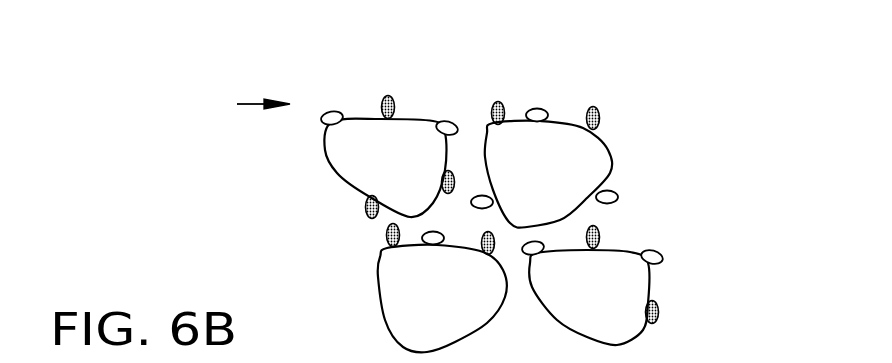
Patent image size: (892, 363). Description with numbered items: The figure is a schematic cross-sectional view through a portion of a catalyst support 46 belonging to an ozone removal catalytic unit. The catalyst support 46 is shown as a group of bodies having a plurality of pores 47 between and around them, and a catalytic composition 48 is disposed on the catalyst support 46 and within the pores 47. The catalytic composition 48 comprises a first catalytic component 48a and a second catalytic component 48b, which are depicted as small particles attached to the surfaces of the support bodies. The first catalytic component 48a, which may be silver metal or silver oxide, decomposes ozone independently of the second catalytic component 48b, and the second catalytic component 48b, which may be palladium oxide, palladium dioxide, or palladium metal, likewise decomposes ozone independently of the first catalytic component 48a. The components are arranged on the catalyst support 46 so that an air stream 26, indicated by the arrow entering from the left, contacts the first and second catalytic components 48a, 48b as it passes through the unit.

The air stream 26 is at (248, 102).
The catalyst support 46 is at (678, 95).
The pores 47 is at (476, 105).
The catalytic composition 48 is at (345, 67).
The first catalytic component 48a is at (384, 98).
The second catalytic component 48b is at (545, 108).